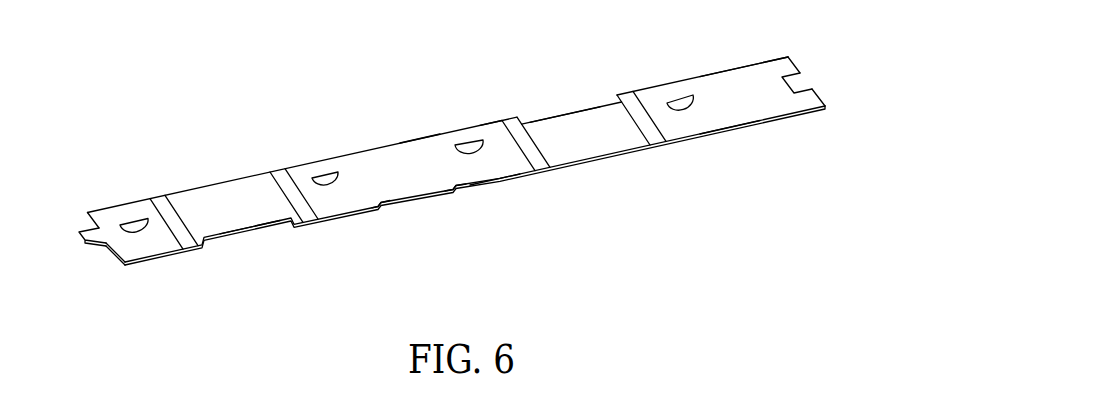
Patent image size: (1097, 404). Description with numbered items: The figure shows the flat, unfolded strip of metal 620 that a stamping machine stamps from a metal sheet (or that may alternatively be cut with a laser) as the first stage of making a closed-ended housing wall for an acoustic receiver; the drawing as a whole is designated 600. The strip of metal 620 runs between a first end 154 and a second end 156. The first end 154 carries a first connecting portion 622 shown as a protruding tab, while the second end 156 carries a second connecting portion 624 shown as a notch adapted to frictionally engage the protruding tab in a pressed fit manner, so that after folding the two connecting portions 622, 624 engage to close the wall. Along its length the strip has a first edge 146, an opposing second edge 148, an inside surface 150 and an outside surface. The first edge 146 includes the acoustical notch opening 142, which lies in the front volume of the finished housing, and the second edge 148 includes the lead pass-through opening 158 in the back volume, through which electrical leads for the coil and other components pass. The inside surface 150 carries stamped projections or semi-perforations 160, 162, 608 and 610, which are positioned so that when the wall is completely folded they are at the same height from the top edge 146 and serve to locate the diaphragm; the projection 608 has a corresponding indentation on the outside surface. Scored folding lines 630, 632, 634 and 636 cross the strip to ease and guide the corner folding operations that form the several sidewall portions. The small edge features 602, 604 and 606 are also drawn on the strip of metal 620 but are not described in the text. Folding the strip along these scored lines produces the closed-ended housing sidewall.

The strip / plate body 600 is at (347, 156).
The strip of metal 620 is at (791, 37).
The first connecting portion 622 is at (86, 245).
The second connecting portion 624 is at (803, 84).
The first end 154 is at (67, 216).
The second end 156 is at (835, 107).
The lead pass-through opening 158 is at (251, 229).
The stamped projection 160 is at (321, 178).
The stamped projection 162 is at (478, 141).
The acoustical notch opening 142 is at (566, 115).
The first edge 146 is at (500, 120).
The second edge 148 is at (508, 175).
The inside surface 150 is at (718, 118).
The scored folding line 630 is at (191, 242).
The scored folding line 632 is at (312, 223).
The scored folding line 634 is at (540, 160).
The scored folding line 636 is at (650, 132).
The projection 610 is at (133, 219).
The second semicircular cutout 602 is at (423, 141).
The projection 608 is at (678, 97).
The first edge notch 604 is at (383, 207).
The second edge notch 606 is at (455, 190).